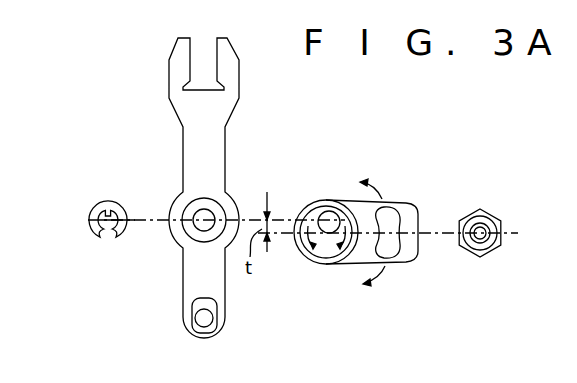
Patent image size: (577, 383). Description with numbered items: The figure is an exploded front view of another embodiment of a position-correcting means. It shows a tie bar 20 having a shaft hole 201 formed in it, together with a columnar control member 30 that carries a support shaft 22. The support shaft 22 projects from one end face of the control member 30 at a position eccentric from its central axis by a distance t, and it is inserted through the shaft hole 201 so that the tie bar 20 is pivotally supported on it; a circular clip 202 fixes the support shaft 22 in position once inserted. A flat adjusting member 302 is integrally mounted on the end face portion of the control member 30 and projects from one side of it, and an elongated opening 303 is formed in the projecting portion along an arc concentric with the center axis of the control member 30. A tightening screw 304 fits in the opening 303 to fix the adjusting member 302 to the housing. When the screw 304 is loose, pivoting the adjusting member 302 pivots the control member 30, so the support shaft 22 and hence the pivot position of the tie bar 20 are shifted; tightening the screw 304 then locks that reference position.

The tie bar 20 is at (225, 143).
The shaft hole 201 is at (199, 214).
The circular clip 202 is at (124, 240).
The support shaft 22 is at (330, 211).
The control member 30 is at (322, 256).
The adjusting member 302 is at (403, 205).
The elongated opening 303 is at (398, 248).
The tightening screw 304 is at (493, 215).